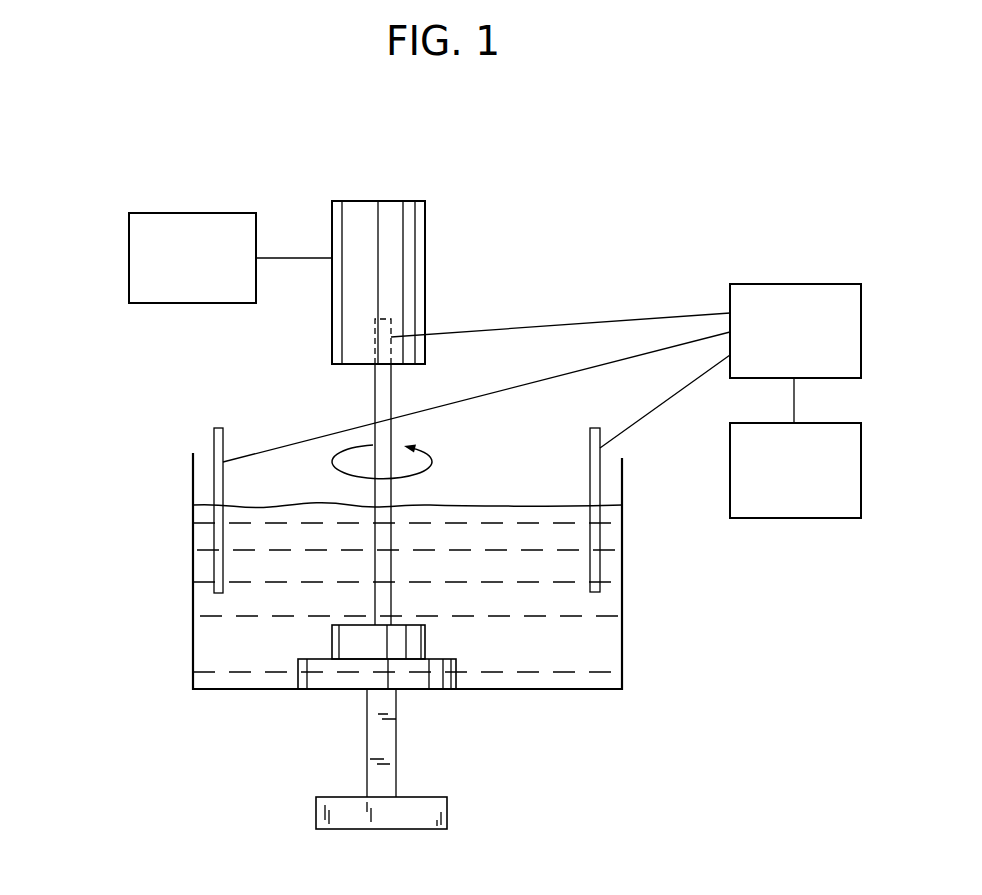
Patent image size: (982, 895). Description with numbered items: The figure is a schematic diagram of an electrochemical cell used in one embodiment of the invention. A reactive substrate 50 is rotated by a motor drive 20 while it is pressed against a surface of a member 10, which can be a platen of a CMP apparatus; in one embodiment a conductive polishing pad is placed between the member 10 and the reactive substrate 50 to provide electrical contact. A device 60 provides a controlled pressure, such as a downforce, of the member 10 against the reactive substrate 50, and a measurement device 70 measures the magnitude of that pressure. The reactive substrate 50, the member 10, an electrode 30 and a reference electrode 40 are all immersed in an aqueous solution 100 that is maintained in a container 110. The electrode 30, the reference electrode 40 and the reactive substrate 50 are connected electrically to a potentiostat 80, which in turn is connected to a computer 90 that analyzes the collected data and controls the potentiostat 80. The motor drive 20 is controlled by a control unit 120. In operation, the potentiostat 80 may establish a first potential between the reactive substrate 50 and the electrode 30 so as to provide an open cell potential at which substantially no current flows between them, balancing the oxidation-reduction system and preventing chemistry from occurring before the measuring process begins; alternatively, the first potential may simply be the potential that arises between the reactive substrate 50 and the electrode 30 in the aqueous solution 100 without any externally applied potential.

The member 10 is at (298, 676).
The motor drive 20 is at (332, 330).
The electrode 30 is at (603, 480).
The reference electrode 40 is at (214, 445).
The reactive substrate 50 is at (332, 643).
The device 60 is at (367, 740).
The measurement device 70 is at (316, 812).
The potentiostat 80 is at (795, 284).
The computer 90 is at (772, 519).
The aqueous solution 100 is at (592, 648).
The container 110 is at (622, 602).
The control unit 120 is at (129, 258).